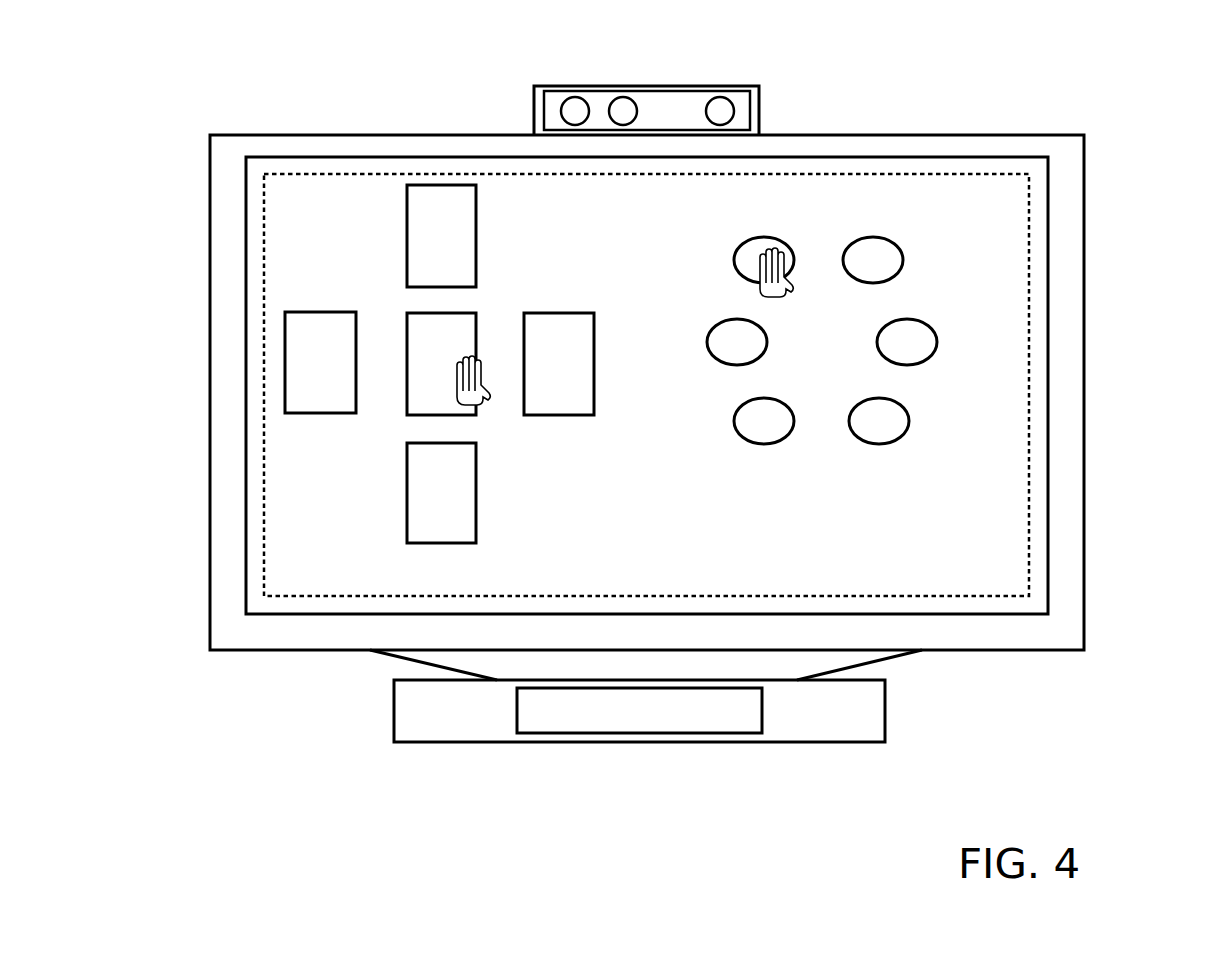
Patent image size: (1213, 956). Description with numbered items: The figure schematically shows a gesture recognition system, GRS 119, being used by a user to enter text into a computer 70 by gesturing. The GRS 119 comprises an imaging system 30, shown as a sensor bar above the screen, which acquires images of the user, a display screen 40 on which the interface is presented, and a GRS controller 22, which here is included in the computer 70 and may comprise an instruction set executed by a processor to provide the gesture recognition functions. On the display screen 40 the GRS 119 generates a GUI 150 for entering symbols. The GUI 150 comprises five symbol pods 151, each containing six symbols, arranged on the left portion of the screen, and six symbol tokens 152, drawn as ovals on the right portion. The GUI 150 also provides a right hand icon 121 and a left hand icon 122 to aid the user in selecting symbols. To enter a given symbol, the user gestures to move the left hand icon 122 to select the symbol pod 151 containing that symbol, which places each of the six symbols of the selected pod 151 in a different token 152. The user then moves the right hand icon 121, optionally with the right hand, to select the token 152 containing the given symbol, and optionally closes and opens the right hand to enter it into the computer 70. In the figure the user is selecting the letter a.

The GRS 119 is at (972, 106).
The display screen 40 is at (227, 378).
The imaging system 30 is at (534, 92).
The GUI 150 is at (264, 261).
The symbol pods 151 is at (476, 313).
The symbol tokens 152 is at (904, 258).
The right hand icon 121 is at (788, 288).
The left hand icon 122 is at (486, 394).
The computer 70 is at (394, 708).
The GRS controller 22 is at (662, 733).